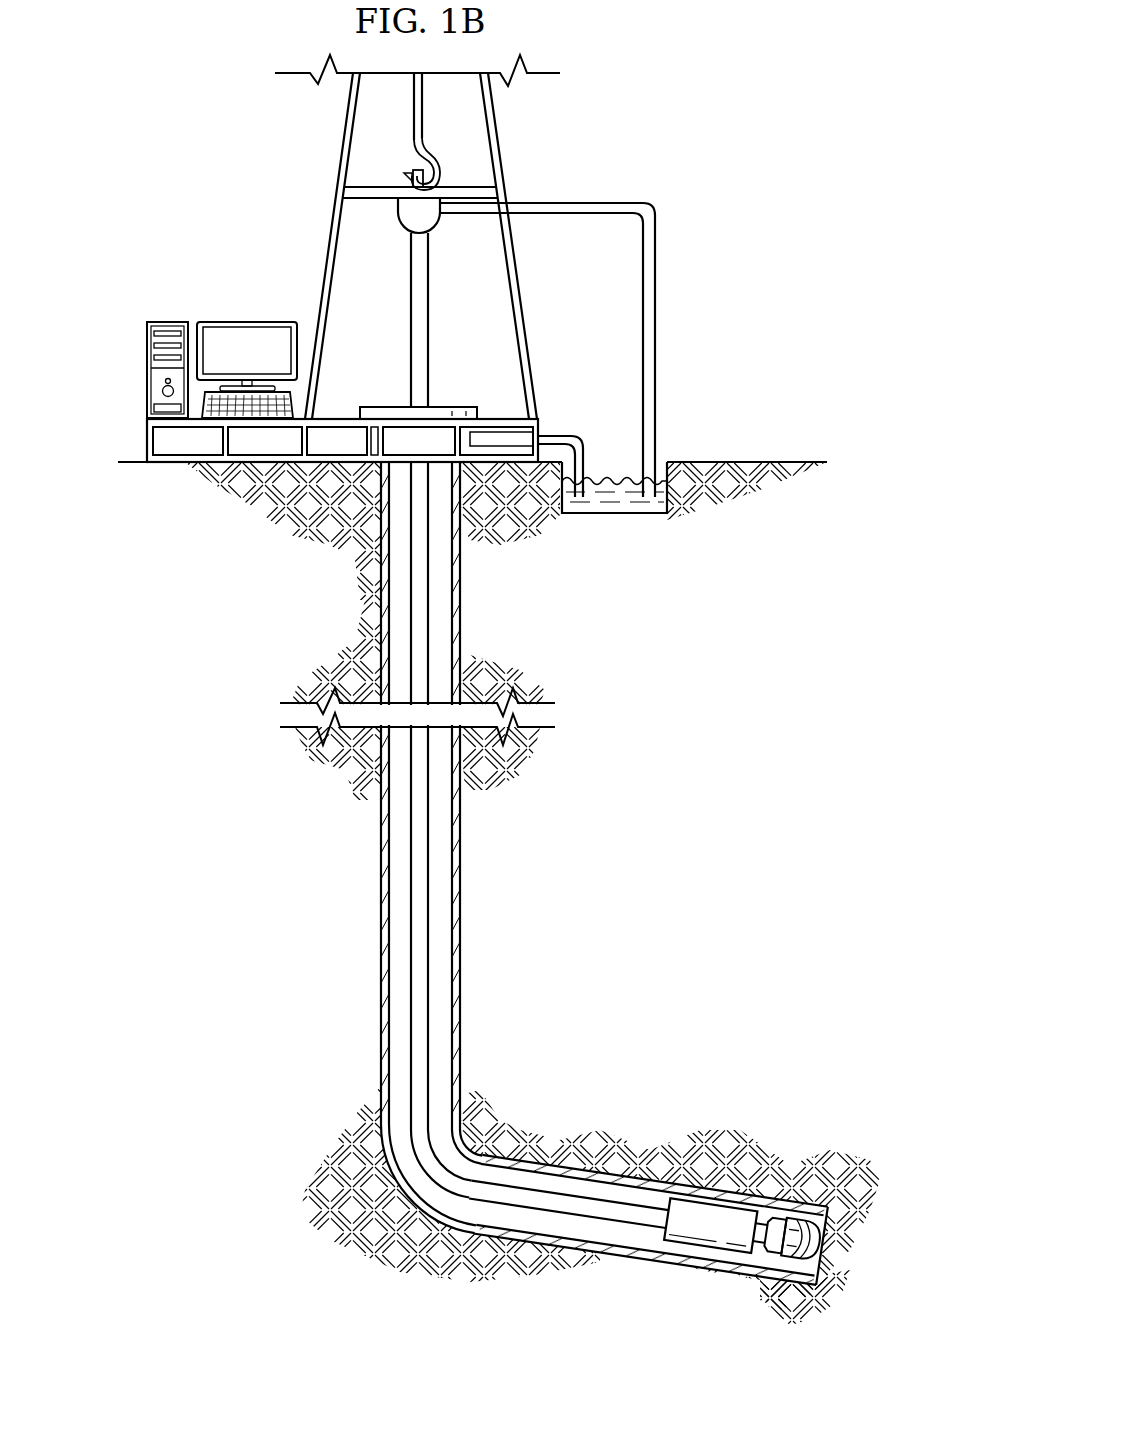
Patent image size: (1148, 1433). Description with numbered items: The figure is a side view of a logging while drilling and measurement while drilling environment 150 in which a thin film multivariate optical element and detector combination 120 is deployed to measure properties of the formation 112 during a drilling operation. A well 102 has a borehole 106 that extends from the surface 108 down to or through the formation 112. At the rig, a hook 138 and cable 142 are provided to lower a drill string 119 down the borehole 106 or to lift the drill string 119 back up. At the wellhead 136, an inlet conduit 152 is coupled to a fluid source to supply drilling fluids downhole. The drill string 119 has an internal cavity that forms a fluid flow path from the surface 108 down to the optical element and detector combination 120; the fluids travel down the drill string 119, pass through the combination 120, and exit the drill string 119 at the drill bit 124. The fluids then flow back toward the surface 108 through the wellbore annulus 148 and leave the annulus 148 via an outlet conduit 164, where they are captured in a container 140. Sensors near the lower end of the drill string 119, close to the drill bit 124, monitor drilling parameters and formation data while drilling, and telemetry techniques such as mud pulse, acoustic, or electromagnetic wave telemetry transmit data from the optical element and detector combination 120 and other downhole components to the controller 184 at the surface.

The well 102 is at (449, 394).
The borehole 106 is at (457, 612).
The surface 108 is at (800, 460).
The formation 112 is at (578, 1127).
The drill string 119 is at (418, 977).
The thin film multivariate optical element and detector combination 120 is at (711, 1254).
The drill bit 124 is at (798, 1283).
The wellhead 136 is at (385, 406).
The hook 138 is at (438, 168).
The container 140 is at (622, 504).
The cable 142 is at (412, 130).
The wellbore annulus 148 is at (398, 853).
The LWD/MWD environment 150 is at (260, 223).
The inlet conduit 152 is at (640, 205).
The outlet conduit 164 is at (556, 436).
The controller 184 is at (168, 320).